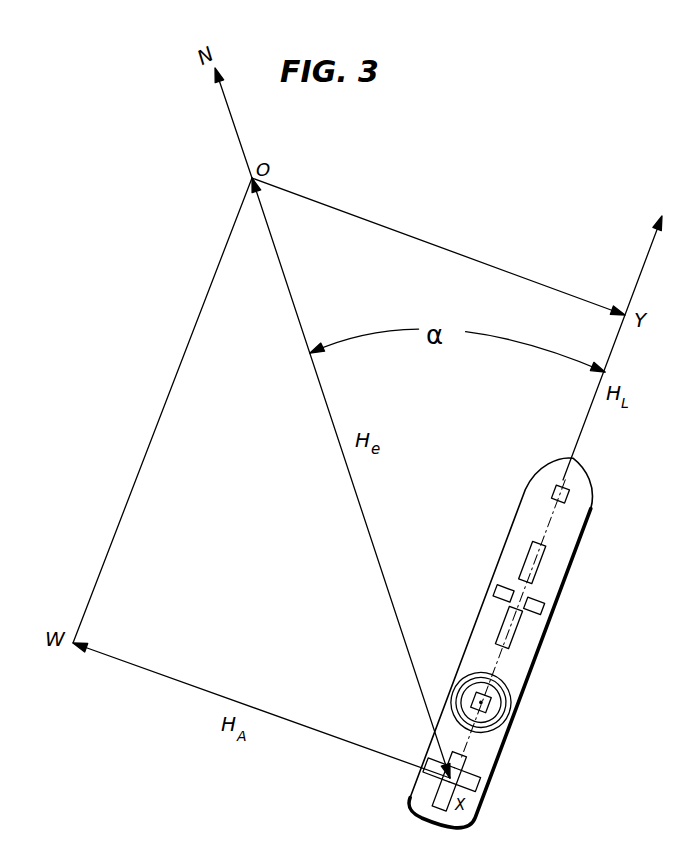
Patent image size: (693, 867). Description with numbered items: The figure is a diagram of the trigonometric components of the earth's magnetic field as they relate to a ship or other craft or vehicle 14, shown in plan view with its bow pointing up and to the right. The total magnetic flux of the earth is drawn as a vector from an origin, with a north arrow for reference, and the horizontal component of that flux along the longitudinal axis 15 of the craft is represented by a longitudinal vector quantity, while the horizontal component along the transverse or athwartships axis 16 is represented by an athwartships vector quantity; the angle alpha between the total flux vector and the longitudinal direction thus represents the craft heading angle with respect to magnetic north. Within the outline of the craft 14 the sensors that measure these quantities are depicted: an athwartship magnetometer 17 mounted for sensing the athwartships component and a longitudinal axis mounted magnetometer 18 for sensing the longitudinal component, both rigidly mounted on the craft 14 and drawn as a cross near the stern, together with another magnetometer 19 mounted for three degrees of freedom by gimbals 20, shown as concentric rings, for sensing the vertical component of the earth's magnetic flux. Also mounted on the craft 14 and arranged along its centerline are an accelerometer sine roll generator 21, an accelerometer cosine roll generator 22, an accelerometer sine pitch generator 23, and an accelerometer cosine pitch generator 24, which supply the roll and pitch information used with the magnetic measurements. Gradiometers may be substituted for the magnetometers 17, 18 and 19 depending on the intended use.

The ship or other craft or vehicle 14 is at (591, 484).
The longitudinal axis 15 is at (548, 499).
The transverse or athwartships axis 16 is at (425, 772).
The athwartship magnetometer 17 is at (477, 782).
The longitudinal axis mounted magnetometer 18 is at (463, 765).
The magnetometer 19 is at (490, 702).
The gimbals 20 is at (507, 686).
The accelerometer sine roll generator 21 is at (498, 586).
The accelerometer cosine roll generator 22 is at (543, 603).
The accelerometer sine pitch generator 23 is at (500, 622).
The accelerometer cosine pitch generator 24 is at (543, 558).